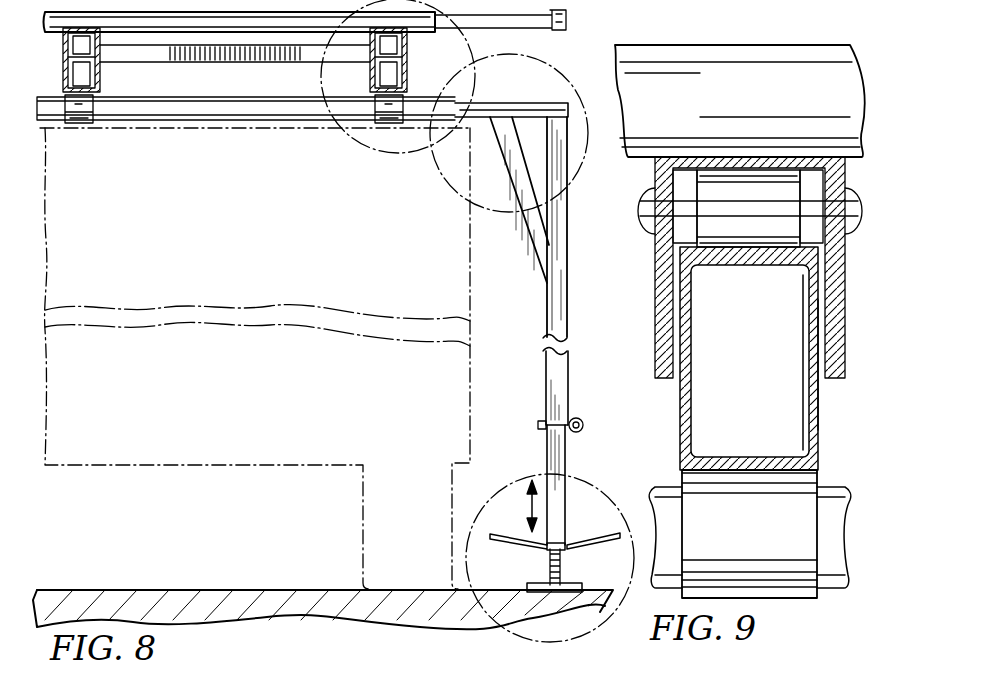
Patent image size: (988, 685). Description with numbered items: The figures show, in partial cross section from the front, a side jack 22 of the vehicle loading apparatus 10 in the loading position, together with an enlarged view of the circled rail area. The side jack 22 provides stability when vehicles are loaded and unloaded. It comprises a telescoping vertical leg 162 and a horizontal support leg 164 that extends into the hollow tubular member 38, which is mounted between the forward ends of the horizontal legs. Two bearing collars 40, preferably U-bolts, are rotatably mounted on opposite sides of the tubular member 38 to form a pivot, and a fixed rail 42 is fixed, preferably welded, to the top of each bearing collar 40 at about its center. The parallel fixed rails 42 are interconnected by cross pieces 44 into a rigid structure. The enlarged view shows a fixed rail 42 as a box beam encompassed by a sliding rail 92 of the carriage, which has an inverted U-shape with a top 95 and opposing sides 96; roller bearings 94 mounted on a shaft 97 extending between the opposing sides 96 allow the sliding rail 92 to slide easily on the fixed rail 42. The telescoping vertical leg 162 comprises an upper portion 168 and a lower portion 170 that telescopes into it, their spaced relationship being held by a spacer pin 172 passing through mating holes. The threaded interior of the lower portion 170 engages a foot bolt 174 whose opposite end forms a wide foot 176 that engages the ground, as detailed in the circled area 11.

In FIG. 8, the apparatus 10 is at (538, 67).
In FIG. 8, the adjustable support detail 11 is at (498, 496).
In FIG. 8, the side jack 22 is at (578, 240).
In FIG. 8, the hollow tubular member 38 is at (415, 100).
In FIG. 8, the bearing collar 40 is at (80, 118).
In FIG. 9, the bearing collar 40 is at (758, 493).
In FIG. 8, the fixed rail 42 is at (100, 75).
In FIG. 9, the fixed rail 42 is at (815, 411).
In FIG. 8, the cross piece 44 is at (240, 63).
In FIG. 9, the sliding rail 92 is at (828, 338).
In FIG. 9, the roller bearing 94 is at (710, 192).
In FIG. 9, the top 95 is at (768, 158).
In FIG. 9, the opposing sides 96 is at (828, 291).
In FIG. 9, the shaft 97 is at (668, 203).
In FIG. 8, the telescoping vertical leg 162 is at (549, 283).
In FIG. 8, the horizontal support leg 164 is at (517, 104).
In FIG. 8, the upper portion 168 is at (553, 383).
In FIG. 8, the lower portion 170 is at (560, 512).
In FIG. 8, the spacer pin 172 is at (581, 420).
In FIG. 8, the foot bolt 174 is at (548, 567).
In FIG. 8, the foot 176 is at (570, 584).